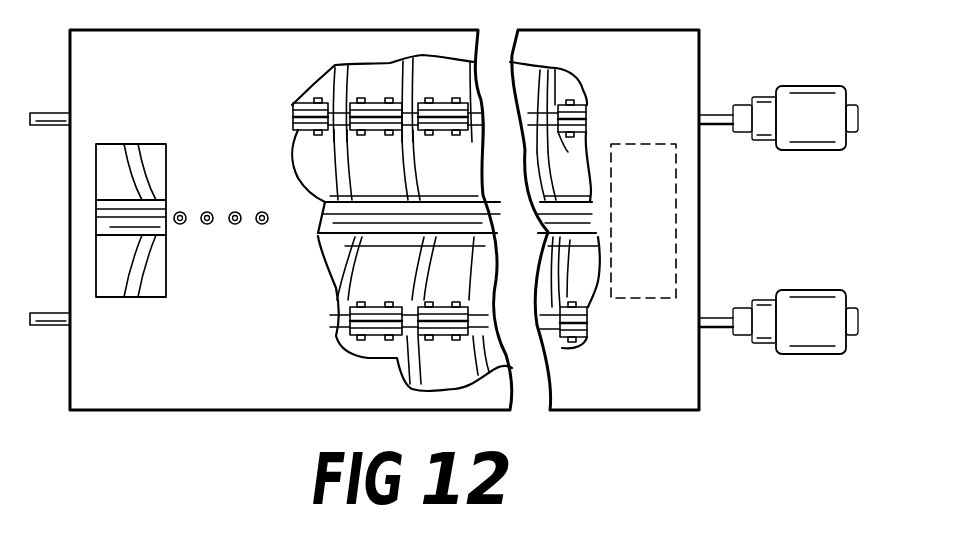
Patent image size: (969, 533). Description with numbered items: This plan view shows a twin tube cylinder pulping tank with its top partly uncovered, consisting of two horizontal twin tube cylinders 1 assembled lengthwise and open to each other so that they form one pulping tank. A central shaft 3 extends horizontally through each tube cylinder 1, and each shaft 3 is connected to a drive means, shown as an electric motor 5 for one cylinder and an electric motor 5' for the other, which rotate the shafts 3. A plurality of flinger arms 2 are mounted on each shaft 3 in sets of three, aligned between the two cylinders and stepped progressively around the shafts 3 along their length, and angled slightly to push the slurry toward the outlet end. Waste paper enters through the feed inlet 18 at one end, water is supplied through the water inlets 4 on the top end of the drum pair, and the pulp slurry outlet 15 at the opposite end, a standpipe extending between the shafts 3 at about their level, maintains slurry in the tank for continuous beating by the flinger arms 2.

The twin tube cylinder 1 is at (197, 40).
The flinger arms 2 is at (427, 87).
The central shaft 3 is at (48, 115).
The water inlets 4 is at (184, 212).
The electric motor 5 is at (795, 104).
The electric motor 5' is at (796, 311).
The pulp slurry outlet 15 is at (678, 196).
The feed inlet 18 is at (96, 188).